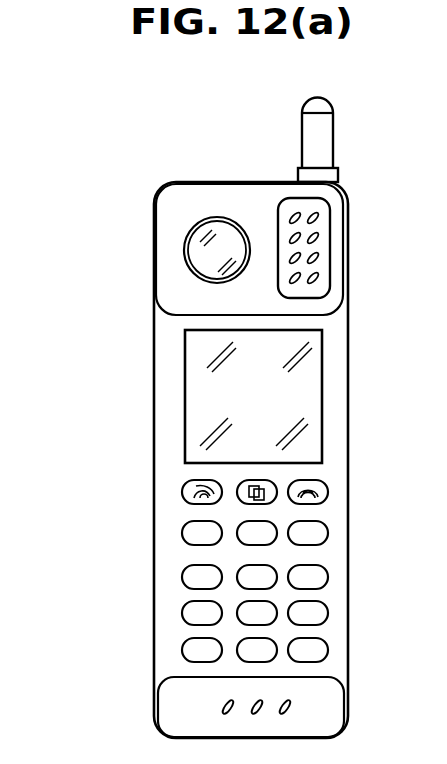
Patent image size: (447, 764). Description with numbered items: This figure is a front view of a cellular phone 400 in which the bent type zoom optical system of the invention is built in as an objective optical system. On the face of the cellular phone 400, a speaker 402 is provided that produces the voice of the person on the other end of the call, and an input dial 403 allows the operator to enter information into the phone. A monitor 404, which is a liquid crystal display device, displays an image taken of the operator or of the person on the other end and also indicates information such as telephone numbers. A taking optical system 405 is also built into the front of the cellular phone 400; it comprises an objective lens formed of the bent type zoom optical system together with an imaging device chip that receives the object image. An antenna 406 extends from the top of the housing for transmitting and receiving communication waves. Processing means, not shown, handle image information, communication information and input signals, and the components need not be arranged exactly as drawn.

The cellular phone 400 is at (135, 440).
The speaker 402 is at (284, 202).
The input dial 403 is at (182, 574).
The monitor 404 is at (195, 373).
The taking optical system 405 is at (169, 250).
The antenna 406 is at (323, 135).